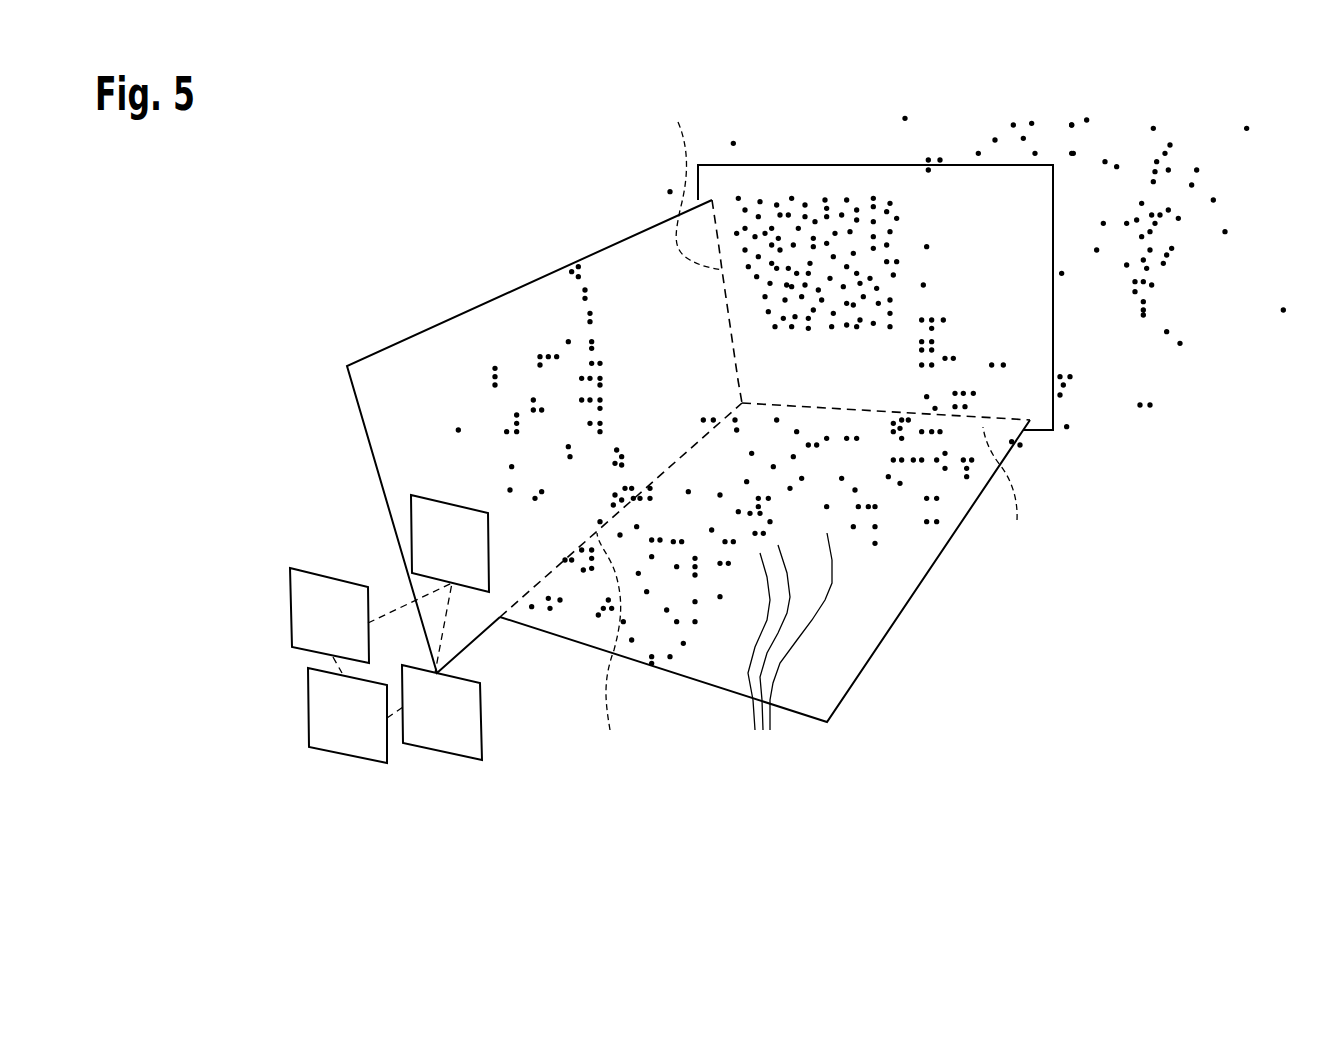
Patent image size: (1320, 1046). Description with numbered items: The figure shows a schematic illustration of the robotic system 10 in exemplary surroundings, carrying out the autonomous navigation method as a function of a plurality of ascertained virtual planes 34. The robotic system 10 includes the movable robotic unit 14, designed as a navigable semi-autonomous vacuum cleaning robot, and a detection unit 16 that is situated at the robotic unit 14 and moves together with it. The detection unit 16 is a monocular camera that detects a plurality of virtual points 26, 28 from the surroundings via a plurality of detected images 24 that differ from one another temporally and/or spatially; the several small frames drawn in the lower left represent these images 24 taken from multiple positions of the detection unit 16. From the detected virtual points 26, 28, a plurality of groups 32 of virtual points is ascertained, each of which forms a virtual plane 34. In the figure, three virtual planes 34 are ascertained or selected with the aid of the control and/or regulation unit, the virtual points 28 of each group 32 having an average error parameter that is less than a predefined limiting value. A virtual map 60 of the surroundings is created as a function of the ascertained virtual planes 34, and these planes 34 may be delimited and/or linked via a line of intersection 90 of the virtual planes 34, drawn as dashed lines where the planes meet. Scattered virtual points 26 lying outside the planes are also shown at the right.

The robotic system 10 is at (690, 775).
The movable robotic unit 14 is at (314, 758).
The detection unit 16 is at (323, 775).
The detected images 24 is at (411, 672).
The virtual points 26 is at (1167, 302).
The virtual points 28 is at (790, 649).
The groups of virtual points 32 is at (548, 342).
The virtual plane 34 is at (592, 247).
The virtual map 60 is at (945, 668).
The line of intersection 90 is at (815, 425).